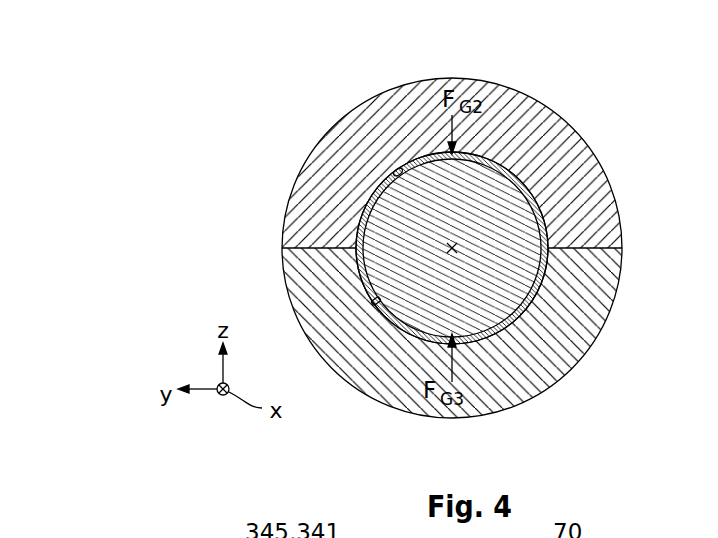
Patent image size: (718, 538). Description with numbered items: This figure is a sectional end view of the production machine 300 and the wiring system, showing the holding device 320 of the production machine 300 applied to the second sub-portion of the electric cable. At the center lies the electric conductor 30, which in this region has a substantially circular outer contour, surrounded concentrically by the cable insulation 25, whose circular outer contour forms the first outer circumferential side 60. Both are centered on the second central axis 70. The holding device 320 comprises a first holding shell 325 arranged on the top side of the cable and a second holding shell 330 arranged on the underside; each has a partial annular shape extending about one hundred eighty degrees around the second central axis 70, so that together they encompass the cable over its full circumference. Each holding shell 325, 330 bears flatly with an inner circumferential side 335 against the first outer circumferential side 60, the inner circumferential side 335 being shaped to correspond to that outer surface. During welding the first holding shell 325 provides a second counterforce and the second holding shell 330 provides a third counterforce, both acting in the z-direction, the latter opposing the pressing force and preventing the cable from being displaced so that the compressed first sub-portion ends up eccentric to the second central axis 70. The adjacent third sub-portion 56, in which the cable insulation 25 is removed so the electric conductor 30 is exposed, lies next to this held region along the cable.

The first holding shell 325 is at (425, 102).
The second holding shell 330 is at (580, 278).
The production machine 300 is at (467, 270).
The holding device 320 is at (583, 372).
The cable insulation 25 is at (543, 232).
The third sub-portion 56 is at (367, 248).
The electric conductor 30 is at (390, 222).
The second central axis 70 is at (458, 247).
The inner circumferential side 335 is at (402, 166).
The first outer circumferential side 60 is at (466, 342).